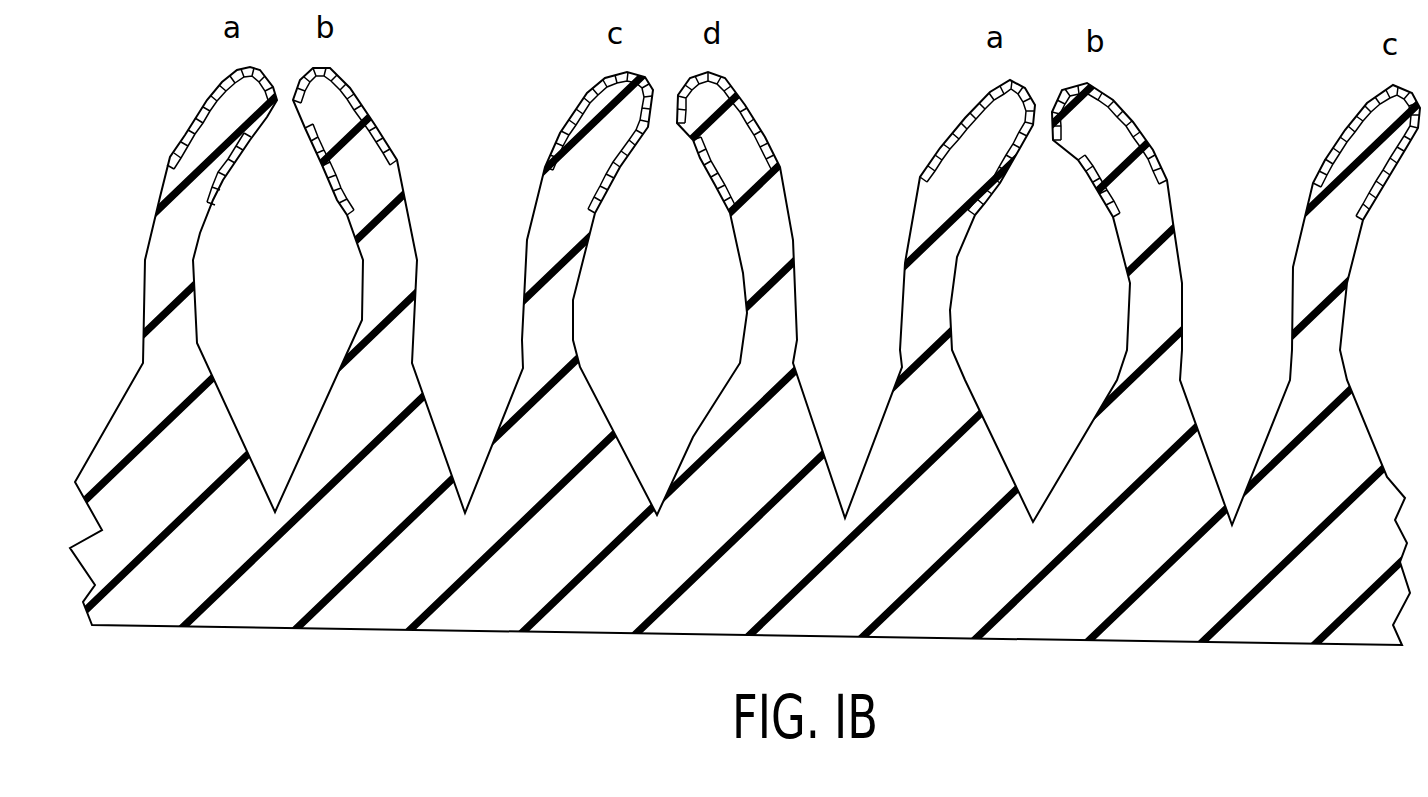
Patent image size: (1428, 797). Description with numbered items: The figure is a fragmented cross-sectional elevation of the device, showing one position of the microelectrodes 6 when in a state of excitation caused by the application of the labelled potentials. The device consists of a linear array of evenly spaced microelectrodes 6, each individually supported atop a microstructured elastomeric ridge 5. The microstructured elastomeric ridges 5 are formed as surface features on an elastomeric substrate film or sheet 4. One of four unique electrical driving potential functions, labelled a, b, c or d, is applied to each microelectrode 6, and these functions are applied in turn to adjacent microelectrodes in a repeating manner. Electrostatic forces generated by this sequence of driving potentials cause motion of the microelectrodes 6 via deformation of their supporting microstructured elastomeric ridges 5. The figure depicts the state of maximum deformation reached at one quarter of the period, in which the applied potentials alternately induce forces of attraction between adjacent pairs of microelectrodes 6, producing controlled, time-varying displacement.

The elastomeric substrate film or sheet 4 is at (1238, 579).
The microstructured elastomeric ridges 5 is at (920, 292).
The microelectrodes 6 is at (928, 121).